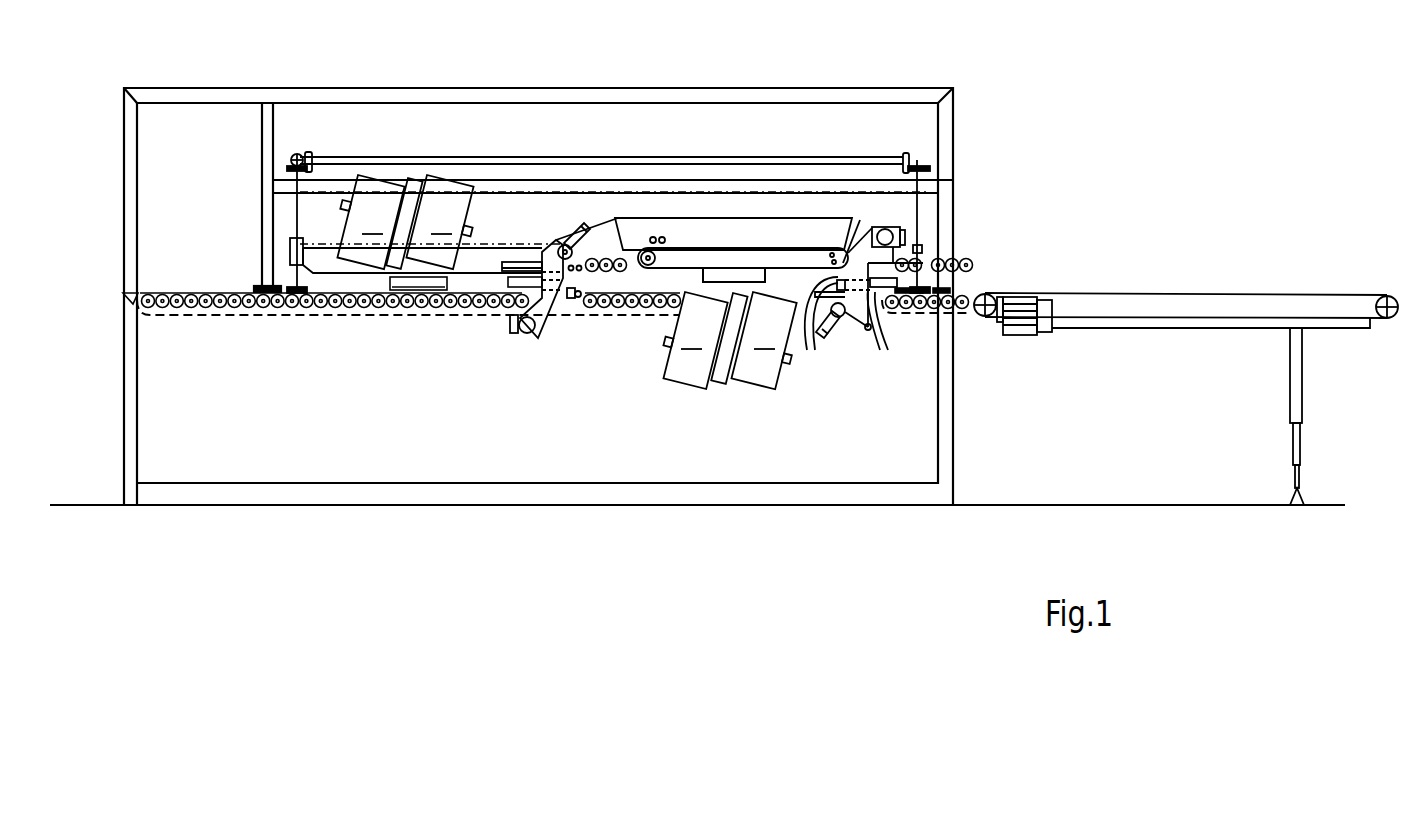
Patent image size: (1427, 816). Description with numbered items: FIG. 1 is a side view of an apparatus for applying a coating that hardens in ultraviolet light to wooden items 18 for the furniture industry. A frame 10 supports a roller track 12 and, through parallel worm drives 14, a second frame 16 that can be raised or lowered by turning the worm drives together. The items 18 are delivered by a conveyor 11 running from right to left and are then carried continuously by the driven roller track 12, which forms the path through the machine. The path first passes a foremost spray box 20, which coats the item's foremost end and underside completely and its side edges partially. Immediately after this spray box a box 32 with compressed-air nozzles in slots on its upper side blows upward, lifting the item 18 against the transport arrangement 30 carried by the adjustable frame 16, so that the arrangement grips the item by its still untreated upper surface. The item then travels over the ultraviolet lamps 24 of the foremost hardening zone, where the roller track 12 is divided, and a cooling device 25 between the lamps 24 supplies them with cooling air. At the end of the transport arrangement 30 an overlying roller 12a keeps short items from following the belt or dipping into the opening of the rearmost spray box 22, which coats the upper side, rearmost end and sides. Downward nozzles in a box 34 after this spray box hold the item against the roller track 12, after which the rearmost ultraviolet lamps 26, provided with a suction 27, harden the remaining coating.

The frame 10 is at (945, 410).
The conveyor 11 is at (1123, 292).
The roller track 12 is at (417, 308).
The overlying roller 12a is at (618, 308).
The worm drives 14 is at (298, 205).
The frame 16 is at (683, 232).
The items 18 is at (772, 268).
The foremost spray box 20 is at (857, 326).
The rearmost spray box 22 is at (543, 336).
The ultraviolet lamps 24 is at (730, 340).
The cooling device 25 is at (720, 370).
The lamps 26 is at (406, 222).
The suction 27 is at (419, 180).
The transport arrangement 30 is at (740, 277).
The box 32 is at (820, 340).
The box 34 is at (512, 262).